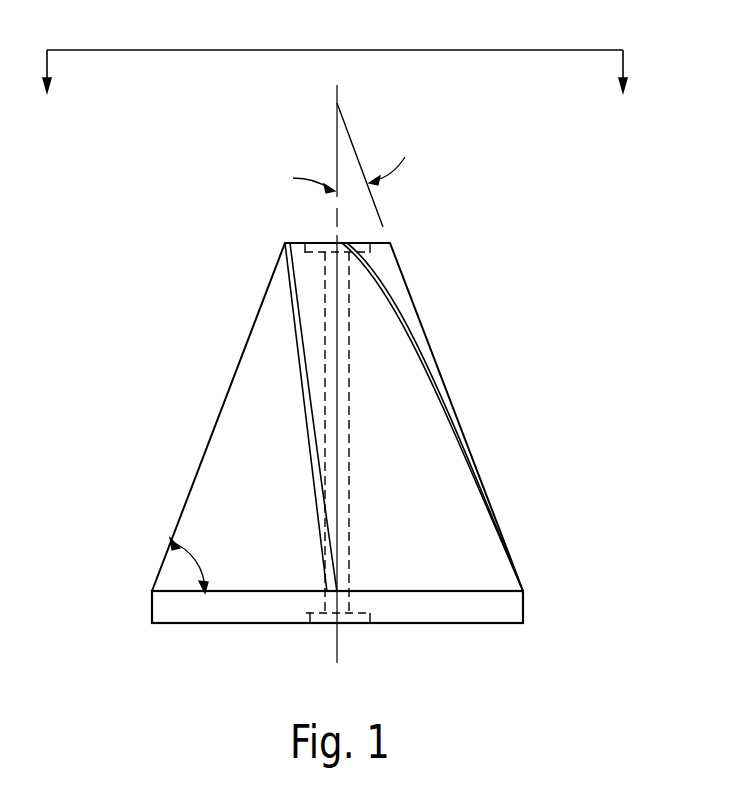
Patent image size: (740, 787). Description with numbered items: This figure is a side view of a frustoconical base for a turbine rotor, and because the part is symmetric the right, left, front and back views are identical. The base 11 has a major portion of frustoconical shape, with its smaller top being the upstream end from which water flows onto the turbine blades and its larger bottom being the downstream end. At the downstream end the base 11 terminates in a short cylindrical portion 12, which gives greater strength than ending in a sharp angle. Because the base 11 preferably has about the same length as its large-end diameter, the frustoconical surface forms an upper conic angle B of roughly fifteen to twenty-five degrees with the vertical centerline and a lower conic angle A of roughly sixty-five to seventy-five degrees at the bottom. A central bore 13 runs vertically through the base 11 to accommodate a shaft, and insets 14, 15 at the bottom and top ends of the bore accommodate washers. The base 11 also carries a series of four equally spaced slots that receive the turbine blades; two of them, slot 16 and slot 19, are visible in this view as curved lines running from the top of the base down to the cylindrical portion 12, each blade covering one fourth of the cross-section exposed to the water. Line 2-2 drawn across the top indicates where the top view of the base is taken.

The line 2- 2 is at (334, 54).
The base 11 is at (238, 315).
The cylindrical portion 12 is at (525, 607).
The central bore 13 is at (349, 330).
The inset 14 is at (316, 614).
The inset 15 is at (323, 248).
The slot 16 is at (428, 349).
The slot 19 is at (312, 421).
The lower conic angle A is at (199, 565).
The upper conic angle B is at (358, 164).